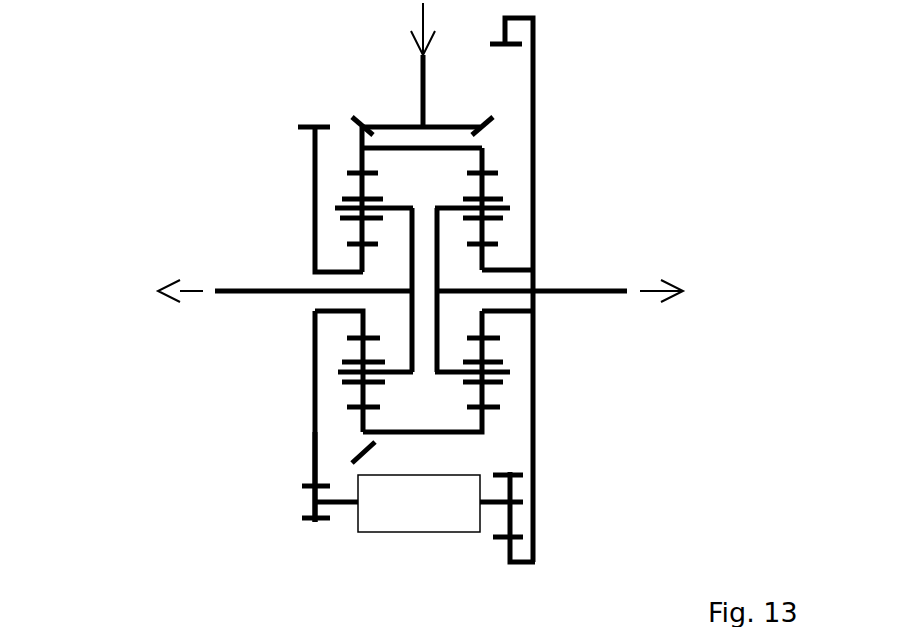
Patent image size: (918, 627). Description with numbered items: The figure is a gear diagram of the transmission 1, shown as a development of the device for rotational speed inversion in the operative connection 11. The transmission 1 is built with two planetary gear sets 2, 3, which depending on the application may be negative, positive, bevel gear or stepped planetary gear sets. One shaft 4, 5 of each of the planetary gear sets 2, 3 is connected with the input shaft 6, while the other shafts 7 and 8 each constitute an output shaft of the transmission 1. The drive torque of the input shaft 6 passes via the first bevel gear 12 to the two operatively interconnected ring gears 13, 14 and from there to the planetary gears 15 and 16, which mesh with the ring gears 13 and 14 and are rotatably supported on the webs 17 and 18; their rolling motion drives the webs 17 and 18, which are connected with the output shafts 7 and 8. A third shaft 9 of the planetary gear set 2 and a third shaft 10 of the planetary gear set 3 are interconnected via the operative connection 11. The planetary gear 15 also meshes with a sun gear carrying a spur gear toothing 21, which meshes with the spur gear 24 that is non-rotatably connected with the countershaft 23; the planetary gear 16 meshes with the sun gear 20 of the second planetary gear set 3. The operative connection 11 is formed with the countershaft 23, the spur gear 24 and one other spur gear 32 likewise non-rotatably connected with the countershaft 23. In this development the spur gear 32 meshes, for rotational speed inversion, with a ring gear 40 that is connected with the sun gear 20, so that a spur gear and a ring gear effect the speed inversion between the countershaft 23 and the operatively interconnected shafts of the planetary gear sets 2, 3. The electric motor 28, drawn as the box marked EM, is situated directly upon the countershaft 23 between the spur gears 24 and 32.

The transmission 1 is at (110, 110).
The planetary gear set 2 is at (280, 190).
The planetary gear set 3 is at (570, 187).
The shaft 4 is at (352, 133).
The shaft 5 is at (495, 157).
The input shaft 6 is at (420, 62).
The output shaft 7 is at (220, 282).
The output shaft 8 is at (615, 285).
The third shaft 9 is at (297, 383).
The third shaft 10 is at (545, 393).
The operative connection 11 is at (290, 516).
The first bevel gear 12 is at (377, 127).
The ring gear 13 is at (365, 420).
The ring gear 14 is at (483, 428).
The planetary gear 15 is at (360, 353).
The planetary gear 16 is at (483, 353).
The web 17 is at (413, 230).
The web 18 is at (440, 303).
The sun gear 20 is at (360, 257).
The spur gear toothing 21 is at (313, 487).
The countershaft 23 is at (340, 505).
The spur gear 24 is at (313, 497).
The electric machine 28 is at (423, 537).
The spur gear 32 is at (513, 520).
The ring gear 40 is at (517, 48).